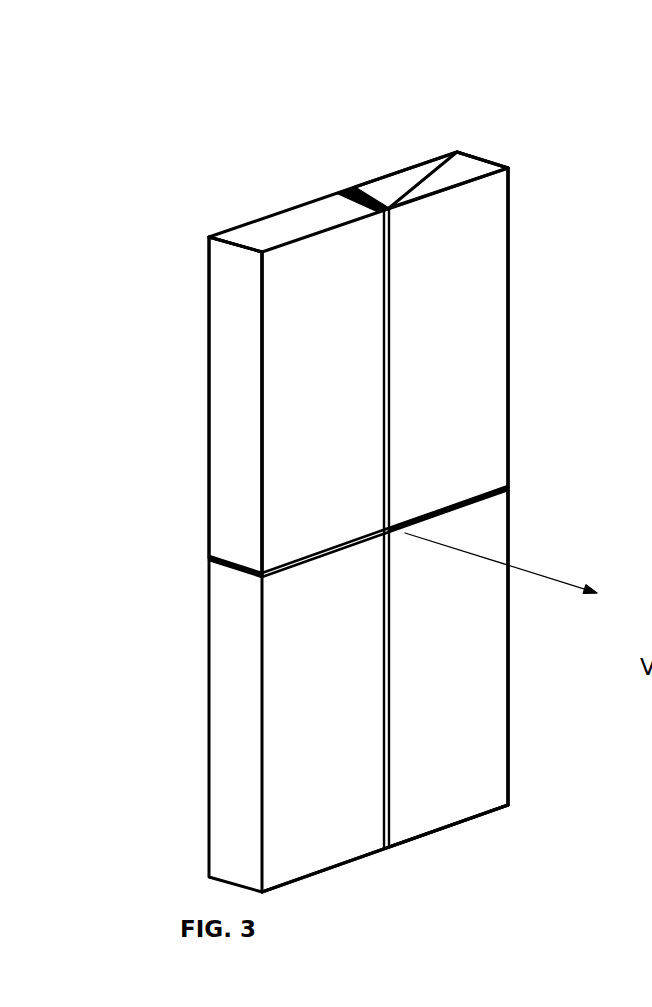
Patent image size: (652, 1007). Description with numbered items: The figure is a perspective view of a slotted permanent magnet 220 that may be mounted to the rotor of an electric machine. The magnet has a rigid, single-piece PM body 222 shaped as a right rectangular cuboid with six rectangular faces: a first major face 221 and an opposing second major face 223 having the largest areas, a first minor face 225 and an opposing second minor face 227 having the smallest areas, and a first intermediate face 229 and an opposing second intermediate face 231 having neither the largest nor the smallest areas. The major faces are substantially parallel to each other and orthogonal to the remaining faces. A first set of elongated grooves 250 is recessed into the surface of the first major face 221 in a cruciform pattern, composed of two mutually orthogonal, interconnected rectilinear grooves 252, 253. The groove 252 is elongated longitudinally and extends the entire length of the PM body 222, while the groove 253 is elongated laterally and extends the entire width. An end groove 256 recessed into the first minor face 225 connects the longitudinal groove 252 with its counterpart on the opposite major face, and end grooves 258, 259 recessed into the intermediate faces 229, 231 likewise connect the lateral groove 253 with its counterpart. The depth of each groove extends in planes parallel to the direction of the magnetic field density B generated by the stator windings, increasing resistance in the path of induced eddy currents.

The slotted permanent magnet 220 is at (218, 93).
The first major face 221 is at (488, 198).
The PM body 222 is at (257, 242).
The second major face 223 is at (405, 159).
The first minor face 225 is at (433, 163).
The end groove 256 is at (332, 189).
The second intermediate face 231 is at (522, 396).
The first intermediate face 229 is at (231, 497).
The end groove 258 is at (230, 560).
The end groove 259 is at (510, 490).
The rectilinear groove 253 is at (452, 510).
The first set of elongated grooves 250 is at (495, 631).
The rectilinear groove 252 is at (390, 747).
The second minor face 227 is at (455, 845).
The magnetic field density B is at (540, 577).